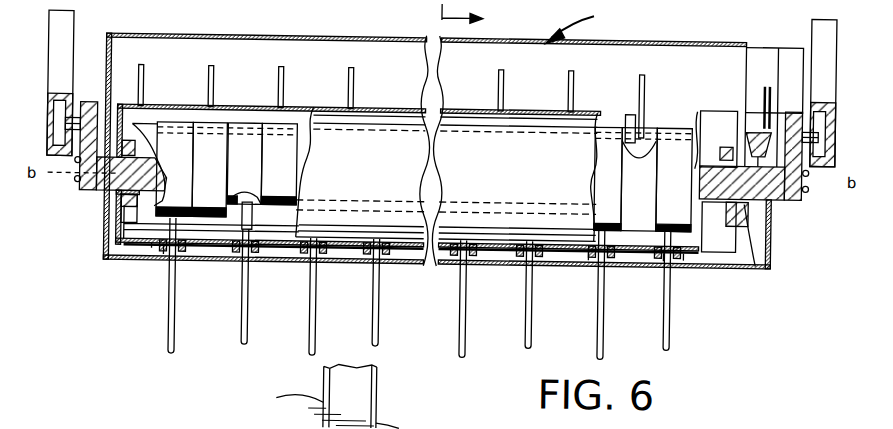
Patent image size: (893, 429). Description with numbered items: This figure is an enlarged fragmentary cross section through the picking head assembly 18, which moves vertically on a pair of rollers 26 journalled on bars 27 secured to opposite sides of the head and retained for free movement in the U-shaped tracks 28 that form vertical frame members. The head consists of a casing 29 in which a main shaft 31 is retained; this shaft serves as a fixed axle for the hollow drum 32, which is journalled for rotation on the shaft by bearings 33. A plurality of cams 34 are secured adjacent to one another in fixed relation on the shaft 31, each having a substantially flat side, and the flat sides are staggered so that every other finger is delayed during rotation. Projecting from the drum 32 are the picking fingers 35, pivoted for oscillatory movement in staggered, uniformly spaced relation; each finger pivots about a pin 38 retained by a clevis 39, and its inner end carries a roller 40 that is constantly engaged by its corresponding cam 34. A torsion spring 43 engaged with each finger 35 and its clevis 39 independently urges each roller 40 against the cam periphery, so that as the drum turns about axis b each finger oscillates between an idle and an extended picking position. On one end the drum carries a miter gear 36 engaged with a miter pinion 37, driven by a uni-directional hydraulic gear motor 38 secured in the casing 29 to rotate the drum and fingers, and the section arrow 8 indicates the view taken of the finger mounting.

The section line 8 is at (455, 17).
The head assembly 18 is at (581, 26).
The rollers 26 is at (63, 129).
The bars 27 is at (88, 108).
The U-shaped tracks 28 is at (63, 101).
The casing 29 is at (233, 39).
The main shaft 31 is at (110, 182).
The hollow drum 32 is at (157, 109).
The bearings 33 is at (140, 147).
The cams 34 is at (166, 184).
The picking fingers 35 is at (209, 73).
The miter gear 36 is at (744, 225).
The miter pinion 37 is at (845, 176).
The hydraulic gear motor 38 is at (765, 79).
The clevis 39 is at (254, 258).
The roller 40 is at (268, 204).
The torsion spring 43 is at (165, 258).